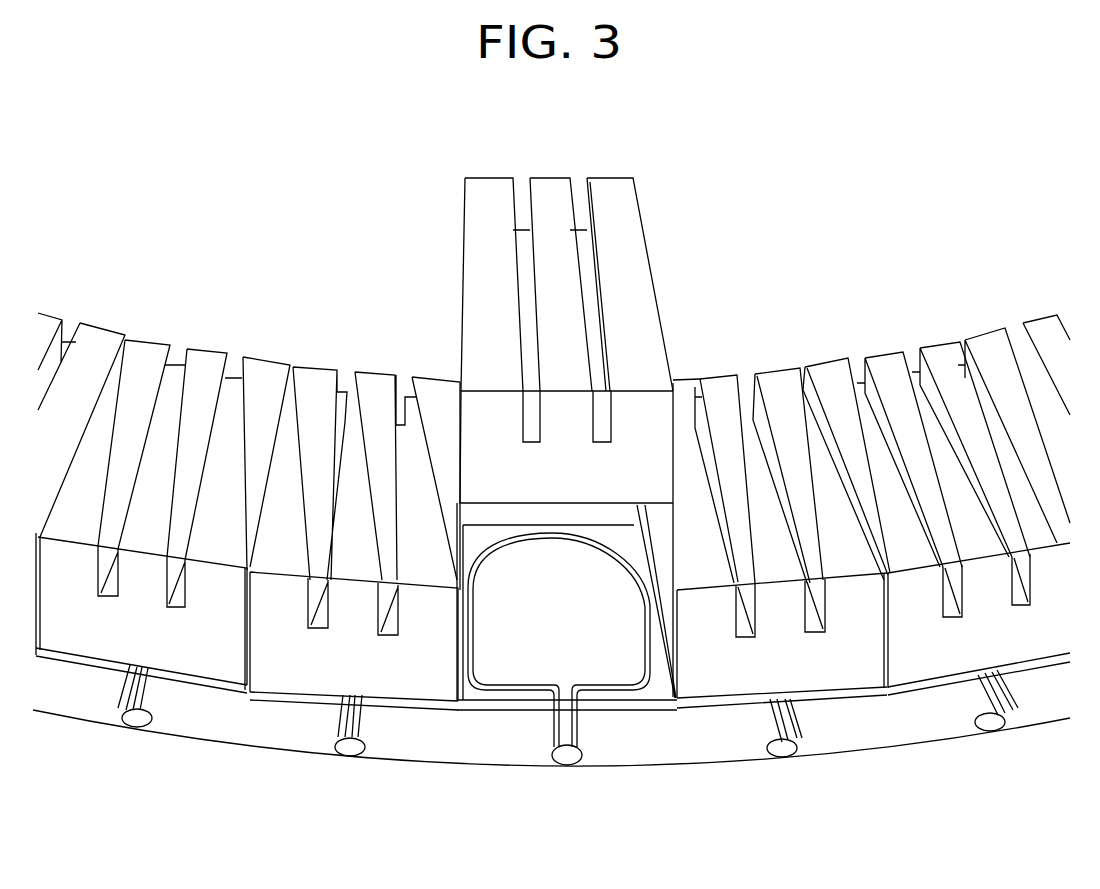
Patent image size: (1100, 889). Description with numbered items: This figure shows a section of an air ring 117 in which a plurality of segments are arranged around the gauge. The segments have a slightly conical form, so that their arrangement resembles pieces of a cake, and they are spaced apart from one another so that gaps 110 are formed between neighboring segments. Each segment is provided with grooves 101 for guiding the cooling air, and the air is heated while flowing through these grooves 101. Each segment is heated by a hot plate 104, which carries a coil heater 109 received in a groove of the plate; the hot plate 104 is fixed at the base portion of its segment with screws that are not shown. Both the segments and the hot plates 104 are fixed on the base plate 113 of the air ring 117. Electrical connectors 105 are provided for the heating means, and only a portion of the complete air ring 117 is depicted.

The grooves 101 is at (574, 197).
The hot plate 104 is at (578, 730).
The electrical connectors 105 is at (600, 607).
The coil heater 109 is at (508, 692).
The gaps 110 is at (810, 358).
The base plate 113 is at (397, 743).
The air ring 117 is at (186, 292).